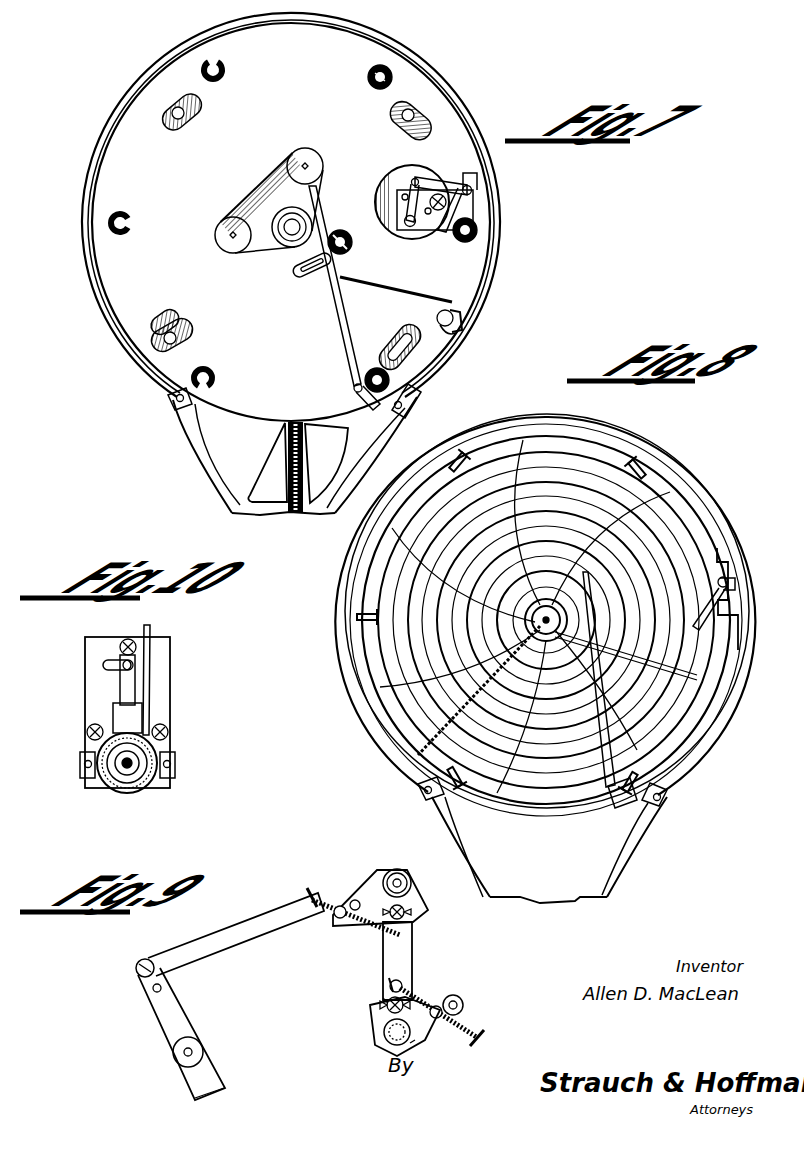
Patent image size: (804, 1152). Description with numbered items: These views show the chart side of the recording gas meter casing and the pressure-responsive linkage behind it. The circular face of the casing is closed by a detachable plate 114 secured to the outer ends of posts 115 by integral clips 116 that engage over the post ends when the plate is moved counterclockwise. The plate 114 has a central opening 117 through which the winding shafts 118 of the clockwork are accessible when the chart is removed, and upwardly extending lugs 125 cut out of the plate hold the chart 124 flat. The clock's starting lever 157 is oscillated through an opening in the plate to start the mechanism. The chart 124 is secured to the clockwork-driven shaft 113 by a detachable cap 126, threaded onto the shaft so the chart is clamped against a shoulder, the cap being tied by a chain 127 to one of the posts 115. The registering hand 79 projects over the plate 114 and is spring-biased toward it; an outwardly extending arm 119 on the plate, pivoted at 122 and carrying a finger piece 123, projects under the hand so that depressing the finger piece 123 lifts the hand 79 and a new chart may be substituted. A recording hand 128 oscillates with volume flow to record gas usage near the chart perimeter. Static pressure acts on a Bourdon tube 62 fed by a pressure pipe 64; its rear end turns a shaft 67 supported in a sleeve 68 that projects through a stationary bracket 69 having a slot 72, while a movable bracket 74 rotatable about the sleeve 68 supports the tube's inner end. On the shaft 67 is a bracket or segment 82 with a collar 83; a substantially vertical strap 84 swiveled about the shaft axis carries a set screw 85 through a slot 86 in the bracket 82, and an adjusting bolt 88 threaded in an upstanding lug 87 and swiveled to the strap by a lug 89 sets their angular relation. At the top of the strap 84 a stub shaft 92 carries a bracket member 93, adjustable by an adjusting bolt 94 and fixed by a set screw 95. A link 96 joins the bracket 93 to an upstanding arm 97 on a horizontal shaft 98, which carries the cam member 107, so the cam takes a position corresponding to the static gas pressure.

In FIG. 7, the detachable plate 114 is at (130, 147).
In FIG. 7, the posts 115 is at (178, 112).
In FIG. 7, the integral clips 116 is at (170, 322).
In FIG. 7, the central opening 117 is at (270, 175).
In FIG. 7, the winding shafts 118 is at (307, 160).
In FIG. 7, the shaft 113 is at (287, 225).
In FIG. 7, the upwardly extending lugs 125 is at (388, 70).
In FIG. 8, the upwardly extending lugs 125 is at (642, 465).
In FIG. 7, the recording hand 128 is at (450, 213).
In FIG. 8, the recording hand 128 is at (728, 580).
In FIG. 7, the starting lever 157 is at (350, 250).
In FIG. 7, the registering hand 79 is at (340, 305).
In FIG. 7, the outwardly extending arm 119 is at (456, 306).
In FIG. 8, the outwardly extending arm 119 is at (700, 665).
In FIG. 7, the pivot 122 is at (462, 326).
In FIG. 7, the finger piece 123 is at (455, 330).
In FIG. 8, the finger piece 123 is at (712, 712).
In FIG. 8, the chart 124 is at (395, 573).
In FIG. 8, the detachable cap 126 is at (547, 612).
In FIG. 8, the chain 127 is at (418, 757).
In FIG. 10, the pressure pipe 64 is at (152, 640).
In FIG. 10, the bracket 69 is at (160, 660).
In FIG. 10, the slot 72 is at (108, 667).
In FIG. 10, the movable bracket 74 is at (125, 688).
In FIG. 10, the Bourdon tube 62 is at (155, 748).
In FIG. 10, the sleeve 68 is at (135, 772).
In FIG. 9, the stub shaft 92 is at (404, 883).
In FIG. 9, the bracket member 93 is at (415, 900).
In FIG. 9, the adjusting bolt 94 is at (326, 897).
In FIG. 9, the set screw 95 is at (412, 916).
In FIG. 9, the link 96 is at (270, 930).
In FIG. 9, the upstanding arm 97 is at (175, 1002).
In FIG. 9, the horizontal shaft 98 is at (202, 1047).
In FIG. 9, the cam member 107 is at (205, 1085).
In FIG. 9, the strap 84 is at (400, 955).
In FIG. 9, the set screw 85 is at (385, 1000).
In FIG. 9, the slot 86 is at (380, 1005).
In FIG. 9, the upstanding lug 87 is at (456, 997).
In FIG. 9, the adjusting bolt 88 is at (455, 1020).
In FIG. 9, the upstanding lug 89 is at (403, 985).
In FIG. 9, the bracket or segment 82 is at (382, 1024).
In FIG. 9, the collar 83 is at (410, 1043).
In FIG. 9, the shaft 67 is at (385, 1040).